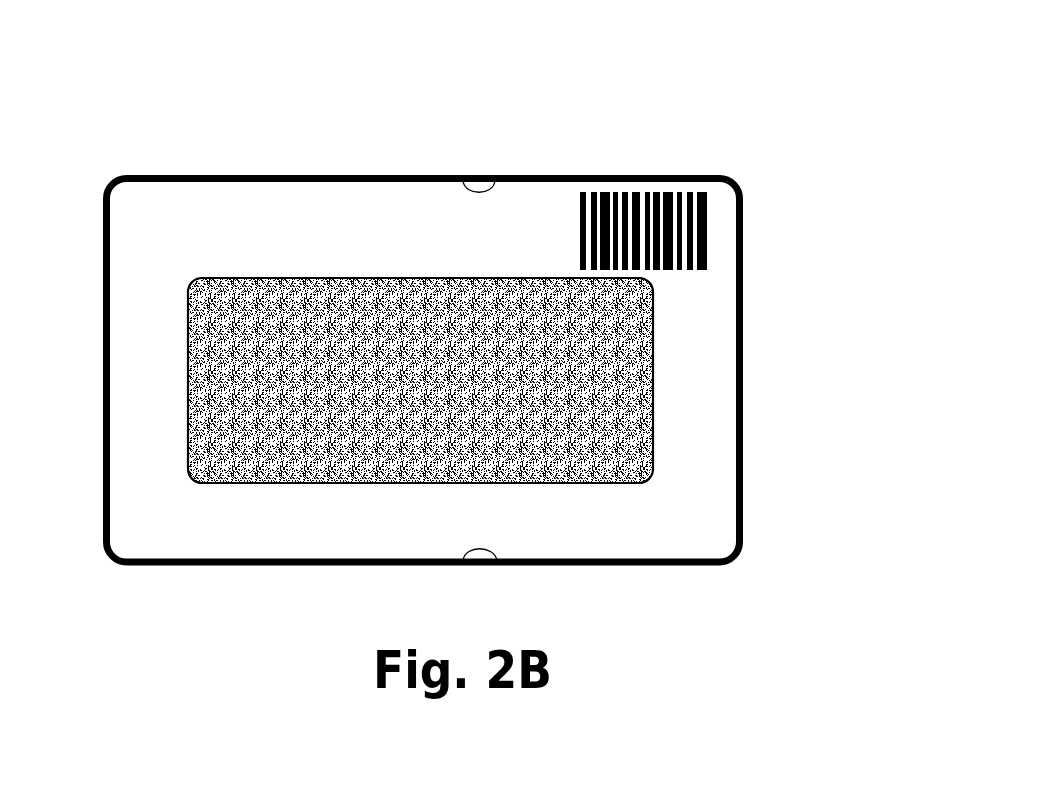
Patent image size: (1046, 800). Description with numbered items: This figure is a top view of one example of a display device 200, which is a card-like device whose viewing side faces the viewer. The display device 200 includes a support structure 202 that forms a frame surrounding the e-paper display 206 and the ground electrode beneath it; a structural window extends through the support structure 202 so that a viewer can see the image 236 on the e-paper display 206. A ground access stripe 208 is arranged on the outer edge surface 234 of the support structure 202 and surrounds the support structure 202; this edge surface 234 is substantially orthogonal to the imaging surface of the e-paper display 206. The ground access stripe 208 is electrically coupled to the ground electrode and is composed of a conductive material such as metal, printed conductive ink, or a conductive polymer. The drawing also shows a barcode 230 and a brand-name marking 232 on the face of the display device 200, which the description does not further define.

The display device 200 is at (553, 105).
The support structure 202 is at (723, 477).
The e-paper display 206 is at (643, 408).
The ground access stripe 208 is at (741, 289).
The barcode 230 is at (705, 222).
The retailer brand name 232 is at (368, 200).
The edge surface 234 is at (493, 176).
The image 236 is at (190, 340).